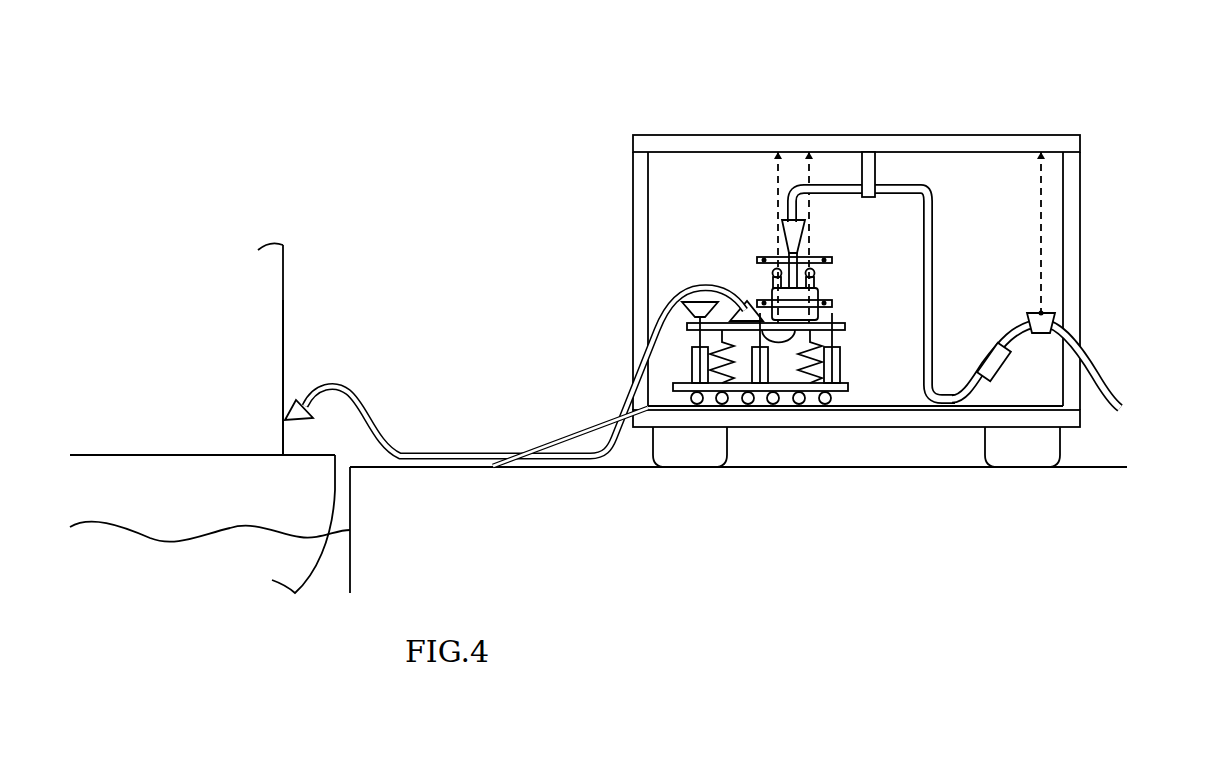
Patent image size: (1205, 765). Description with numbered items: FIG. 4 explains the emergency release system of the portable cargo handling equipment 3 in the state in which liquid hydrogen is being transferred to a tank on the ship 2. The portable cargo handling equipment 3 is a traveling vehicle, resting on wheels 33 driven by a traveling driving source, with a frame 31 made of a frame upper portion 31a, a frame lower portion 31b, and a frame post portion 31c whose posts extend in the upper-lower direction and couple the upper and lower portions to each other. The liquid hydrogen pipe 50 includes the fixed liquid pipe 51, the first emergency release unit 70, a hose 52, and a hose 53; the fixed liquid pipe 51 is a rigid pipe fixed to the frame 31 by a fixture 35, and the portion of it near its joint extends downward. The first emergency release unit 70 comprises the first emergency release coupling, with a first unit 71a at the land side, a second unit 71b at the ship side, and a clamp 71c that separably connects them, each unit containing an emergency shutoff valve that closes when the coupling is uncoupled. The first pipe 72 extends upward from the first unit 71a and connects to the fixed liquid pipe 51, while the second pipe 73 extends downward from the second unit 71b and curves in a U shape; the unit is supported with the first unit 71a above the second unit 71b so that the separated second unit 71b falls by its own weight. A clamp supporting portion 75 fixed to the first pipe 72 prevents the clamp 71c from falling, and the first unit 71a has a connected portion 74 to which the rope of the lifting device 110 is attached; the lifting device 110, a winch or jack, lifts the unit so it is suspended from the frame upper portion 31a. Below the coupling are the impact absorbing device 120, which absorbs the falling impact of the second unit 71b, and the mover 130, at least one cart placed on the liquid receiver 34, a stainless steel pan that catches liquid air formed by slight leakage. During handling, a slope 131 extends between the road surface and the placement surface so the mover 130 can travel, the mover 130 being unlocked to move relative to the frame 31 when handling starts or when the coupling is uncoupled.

The ship 2 is at (325, 338).
The portable cargo handling equipment 3 is at (856, 249).
The frame 31 is at (856, 266).
The frame upper portion 31a is at (1070, 143).
The frame lower portion 31b is at (850, 432).
The frame post portion 31c is at (1082, 198).
The caster / foot 33 is at (727, 440).
The liquid receiver 34 is at (1035, 405).
The fixture 35 is at (877, 170).
The liquid hydrogen pipe 50 is at (937, 305).
The fixed liquid pipe 51 is at (935, 226).
The hose 52 is at (432, 452).
The hose 53 is at (1057, 360).
The first emergency release unit 70 is at (796, 283).
The first unit 71a is at (833, 258).
The second unit 71b is at (833, 303).
The clamp 71c is at (820, 296).
The first pipe 72 is at (796, 261).
The second pipe 73 is at (779, 342).
The connected portion 74 is at (812, 266).
The clamp supporting portion 75 is at (768, 256).
The lifting device 110 is at (773, 183).
The impact absorbing device 120 is at (852, 338).
The mover 130 is at (852, 387).
The slope 131 is at (570, 437).